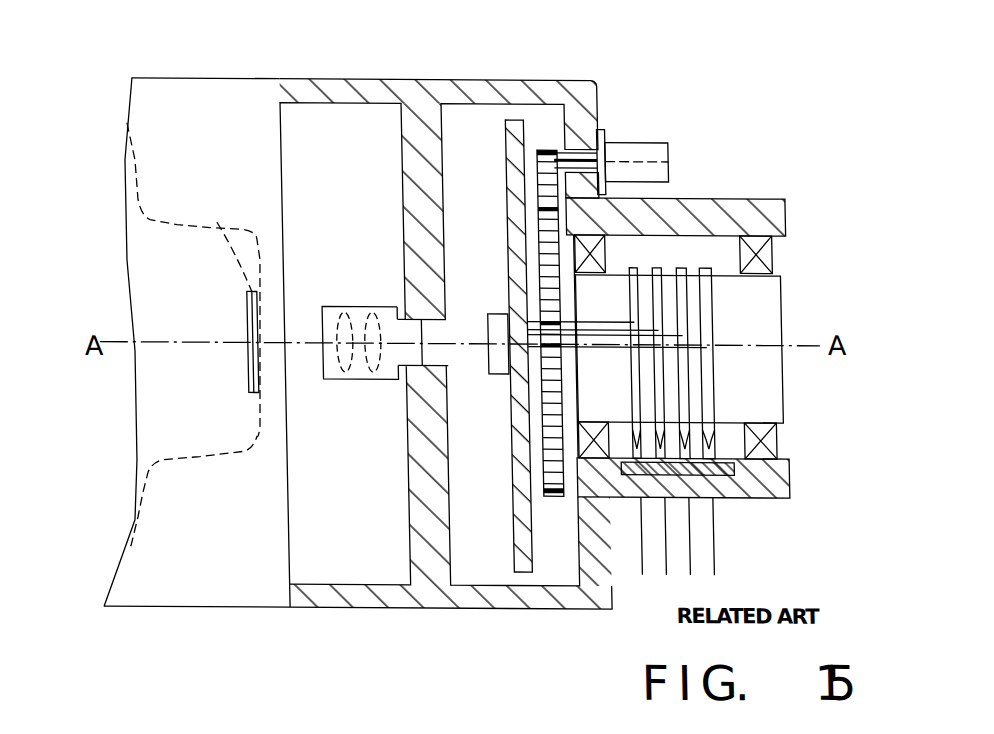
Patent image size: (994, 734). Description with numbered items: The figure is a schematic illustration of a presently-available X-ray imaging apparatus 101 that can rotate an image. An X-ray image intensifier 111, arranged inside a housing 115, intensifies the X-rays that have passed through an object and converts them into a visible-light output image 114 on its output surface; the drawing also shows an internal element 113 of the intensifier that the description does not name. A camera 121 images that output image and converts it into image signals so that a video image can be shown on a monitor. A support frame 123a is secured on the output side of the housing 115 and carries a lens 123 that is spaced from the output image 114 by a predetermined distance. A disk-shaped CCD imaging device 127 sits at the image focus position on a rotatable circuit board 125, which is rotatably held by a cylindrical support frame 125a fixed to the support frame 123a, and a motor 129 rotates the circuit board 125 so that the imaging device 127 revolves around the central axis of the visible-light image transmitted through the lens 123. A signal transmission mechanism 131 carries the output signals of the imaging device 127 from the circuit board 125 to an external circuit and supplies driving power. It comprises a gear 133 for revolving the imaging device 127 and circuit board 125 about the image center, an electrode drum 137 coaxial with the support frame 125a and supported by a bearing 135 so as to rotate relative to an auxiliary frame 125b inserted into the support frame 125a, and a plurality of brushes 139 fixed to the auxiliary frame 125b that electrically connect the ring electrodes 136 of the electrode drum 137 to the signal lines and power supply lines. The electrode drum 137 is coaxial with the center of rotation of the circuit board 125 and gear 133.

The X-ray imaging apparatus 101 is at (441, 24).
The X-ray image intensifier 111 is at (143, 469).
The objective lens outline 113 is at (193, 337).
The output image 114 is at (242, 380).
The housing 115 is at (213, 76).
The camera 121 is at (489, 393).
The lens 123 is at (352, 380).
The support frame 123a is at (346, 610).
The circuit board 125 is at (522, 570).
The support frame 125a is at (560, 79).
The auxiliary frame 125b is at (721, 194).
The CCD imaging device 127 is at (489, 310).
The motor 129 is at (649, 139).
The signal transmission mechanism 131 is at (712, 499).
The gear 133 is at (543, 494).
The bearing 135 is at (601, 250).
The ring electrodes 136 is at (651, 293).
The electrode drum 137 is at (758, 353).
The brushes 139 is at (703, 426).